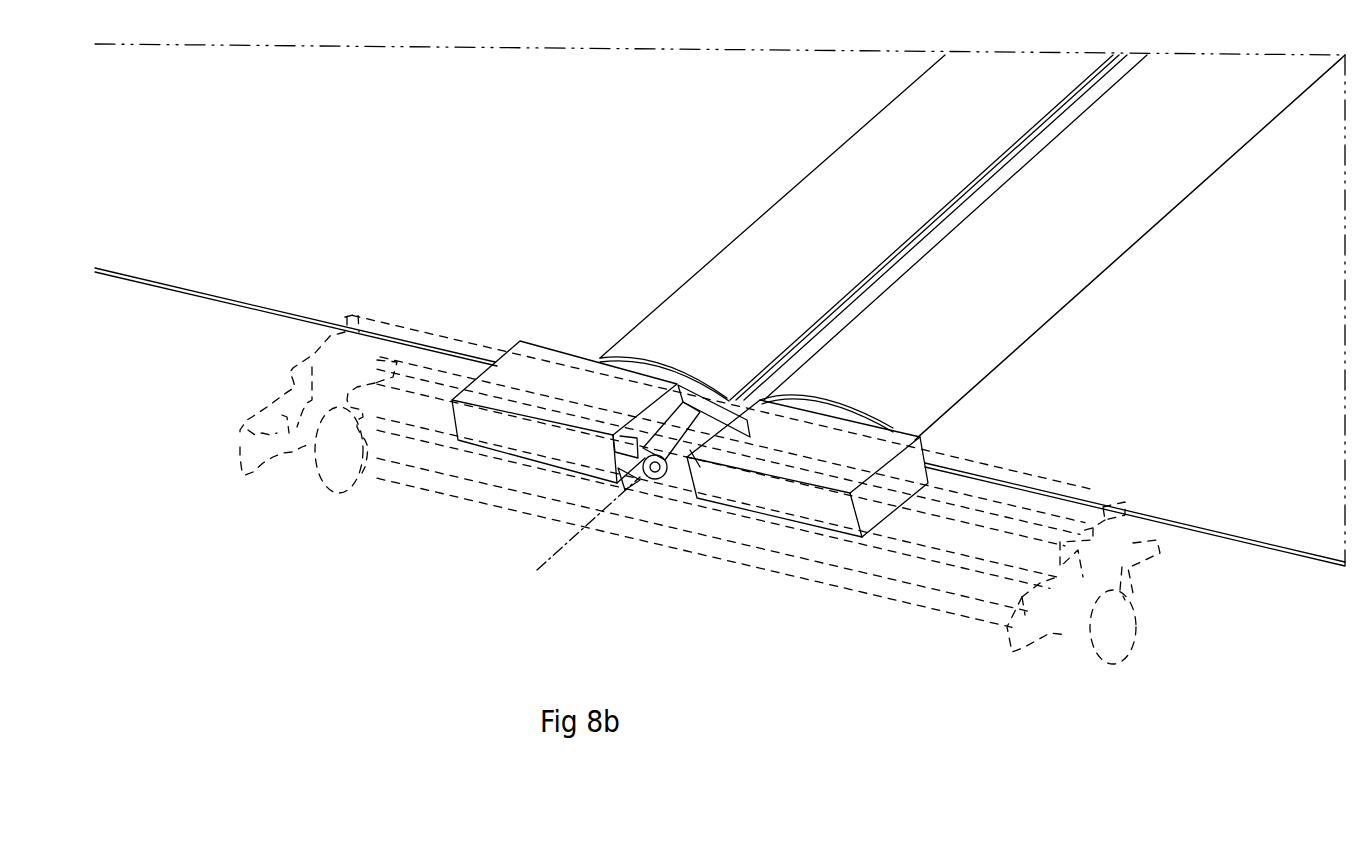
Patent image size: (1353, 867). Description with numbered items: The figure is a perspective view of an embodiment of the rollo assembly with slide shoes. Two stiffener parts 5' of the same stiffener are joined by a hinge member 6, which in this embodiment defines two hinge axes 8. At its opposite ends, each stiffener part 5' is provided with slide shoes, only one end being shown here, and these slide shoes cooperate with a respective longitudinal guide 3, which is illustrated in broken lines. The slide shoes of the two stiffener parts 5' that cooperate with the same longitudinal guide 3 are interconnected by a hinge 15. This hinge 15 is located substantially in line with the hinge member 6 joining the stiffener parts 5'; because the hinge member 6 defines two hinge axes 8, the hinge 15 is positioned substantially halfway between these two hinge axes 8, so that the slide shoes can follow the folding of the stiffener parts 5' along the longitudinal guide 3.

The stiffener part 5' is at (972, 226).
The hinge member 6 is at (1122, 58).
The hinge axis 8 is at (1085, 78).
The hinge 15 is at (648, 483).
The longitudinal guide 3 is at (1133, 593).